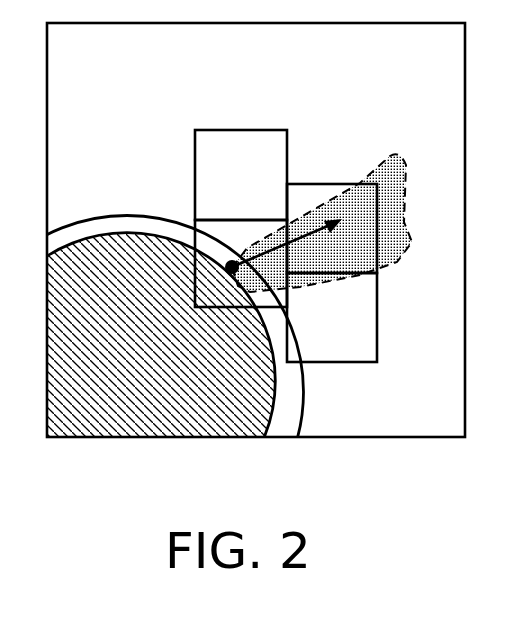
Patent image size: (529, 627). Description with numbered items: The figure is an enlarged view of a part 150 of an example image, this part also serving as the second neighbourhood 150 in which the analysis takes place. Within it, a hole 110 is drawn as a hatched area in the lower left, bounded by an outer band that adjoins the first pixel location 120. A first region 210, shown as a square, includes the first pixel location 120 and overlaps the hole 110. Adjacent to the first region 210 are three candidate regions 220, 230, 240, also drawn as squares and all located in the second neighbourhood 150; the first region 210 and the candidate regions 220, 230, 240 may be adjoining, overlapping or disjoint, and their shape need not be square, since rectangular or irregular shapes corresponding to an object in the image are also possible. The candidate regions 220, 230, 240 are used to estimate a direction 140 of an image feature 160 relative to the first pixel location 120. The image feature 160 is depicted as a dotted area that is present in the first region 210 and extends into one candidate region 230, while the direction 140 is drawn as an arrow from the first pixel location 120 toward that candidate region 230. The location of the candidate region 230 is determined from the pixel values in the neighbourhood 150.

The second neighbourhood 150 is at (122, 77).
The hole 110 is at (252, 408).
The first pixel location 120 is at (195, 240).
The direction 140 is at (300, 233).
The image feature 160 is at (399, 156).
The first region 210 is at (222, 228).
The candidate region 220 is at (244, 140).
The candidate region 230 is at (360, 258).
The candidate region 240 is at (362, 348).